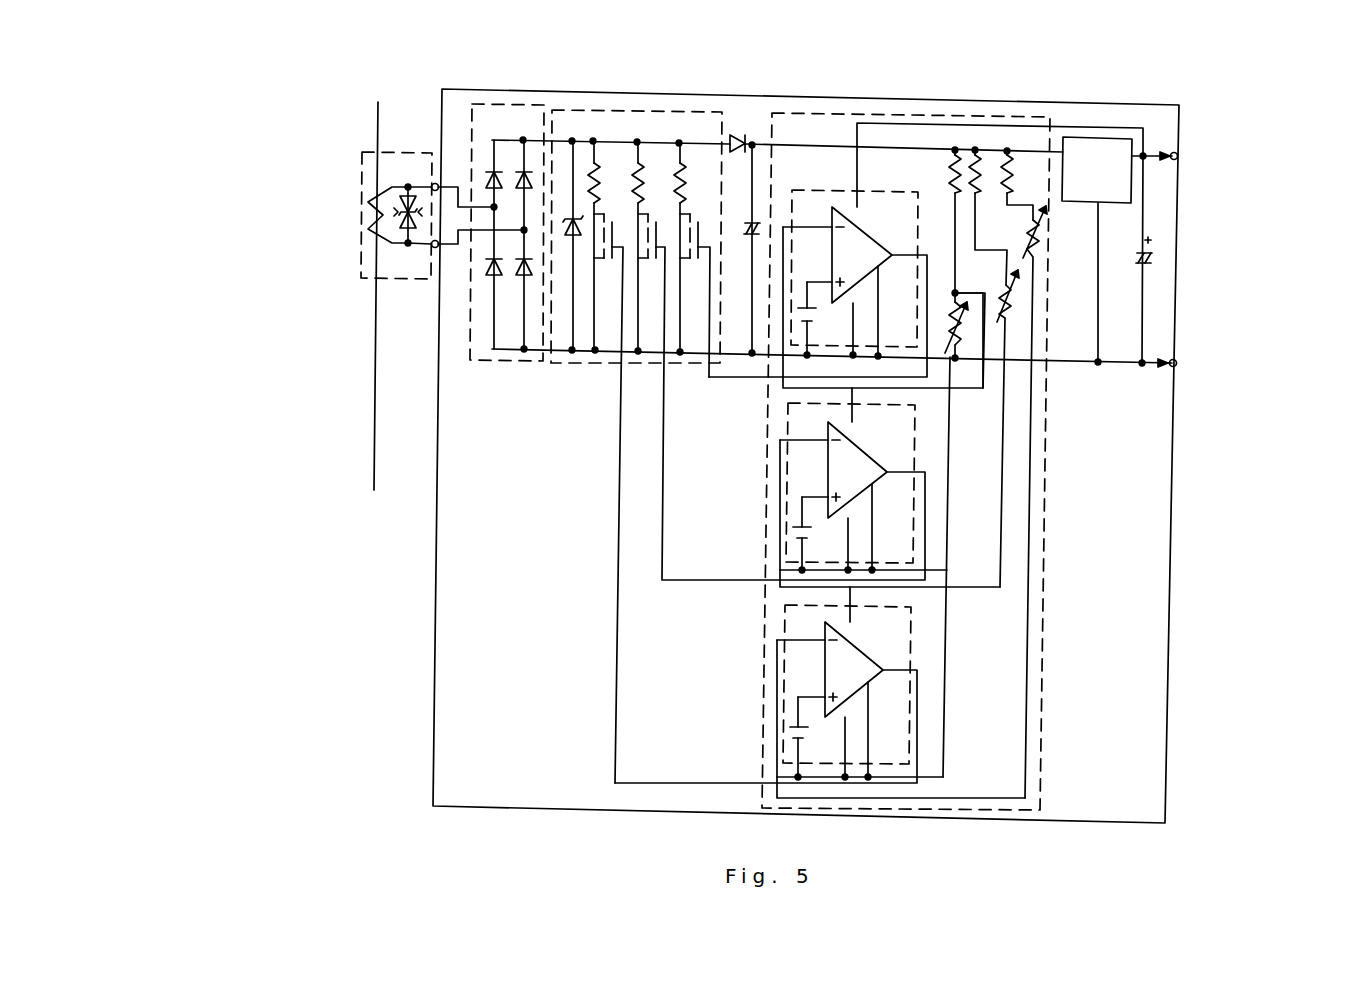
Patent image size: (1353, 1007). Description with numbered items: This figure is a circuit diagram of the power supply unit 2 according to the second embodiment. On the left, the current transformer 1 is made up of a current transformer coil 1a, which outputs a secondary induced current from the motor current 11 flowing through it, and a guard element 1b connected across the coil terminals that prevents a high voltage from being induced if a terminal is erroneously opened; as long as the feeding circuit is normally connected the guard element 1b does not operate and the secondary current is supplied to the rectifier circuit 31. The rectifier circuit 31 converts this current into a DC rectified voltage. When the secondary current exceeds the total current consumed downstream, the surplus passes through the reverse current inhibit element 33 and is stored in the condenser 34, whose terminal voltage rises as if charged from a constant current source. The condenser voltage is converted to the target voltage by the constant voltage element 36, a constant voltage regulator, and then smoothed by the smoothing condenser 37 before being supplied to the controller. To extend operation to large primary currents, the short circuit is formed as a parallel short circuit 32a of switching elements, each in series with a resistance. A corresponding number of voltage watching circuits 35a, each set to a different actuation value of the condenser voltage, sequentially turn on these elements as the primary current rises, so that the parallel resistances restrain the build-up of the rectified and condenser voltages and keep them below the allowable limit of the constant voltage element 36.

The current transformer 1 is at (335, 219).
The current transformer coil 1a is at (382, 228).
The guard element 1b is at (407, 238).
The power supply unit 2 is at (433, 717).
The motor current 11 is at (376, 320).
The rectifier circuit 31 is at (487, 358).
The parallel short circuit 32a is at (603, 360).
The reverse current inhibit element 33 is at (743, 132).
The condenser 34 is at (758, 222).
The voltage watching circuit 35a is at (1030, 641).
The constant voltage element 36 is at (1080, 137).
The smoothing condenser 37 is at (1152, 250).